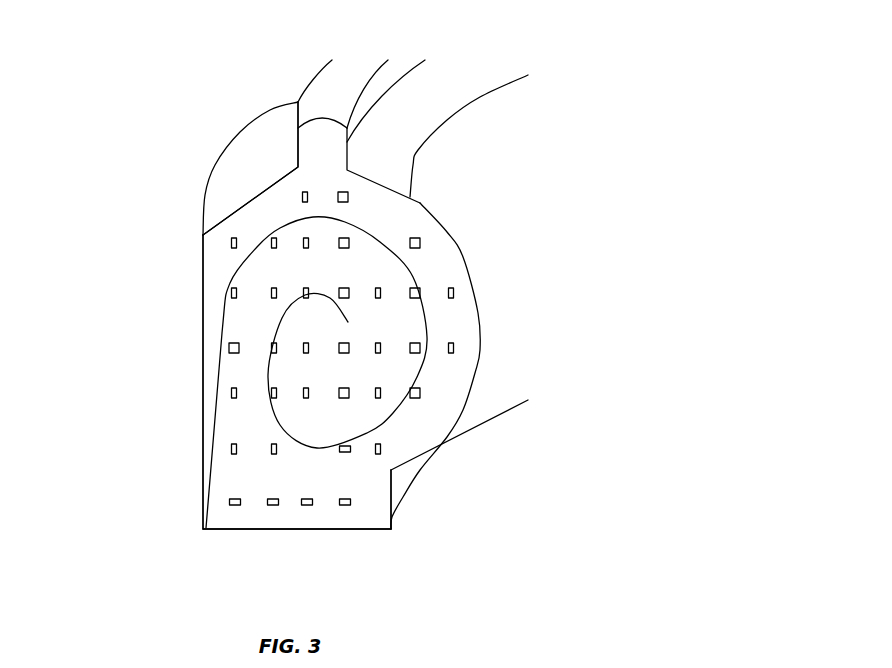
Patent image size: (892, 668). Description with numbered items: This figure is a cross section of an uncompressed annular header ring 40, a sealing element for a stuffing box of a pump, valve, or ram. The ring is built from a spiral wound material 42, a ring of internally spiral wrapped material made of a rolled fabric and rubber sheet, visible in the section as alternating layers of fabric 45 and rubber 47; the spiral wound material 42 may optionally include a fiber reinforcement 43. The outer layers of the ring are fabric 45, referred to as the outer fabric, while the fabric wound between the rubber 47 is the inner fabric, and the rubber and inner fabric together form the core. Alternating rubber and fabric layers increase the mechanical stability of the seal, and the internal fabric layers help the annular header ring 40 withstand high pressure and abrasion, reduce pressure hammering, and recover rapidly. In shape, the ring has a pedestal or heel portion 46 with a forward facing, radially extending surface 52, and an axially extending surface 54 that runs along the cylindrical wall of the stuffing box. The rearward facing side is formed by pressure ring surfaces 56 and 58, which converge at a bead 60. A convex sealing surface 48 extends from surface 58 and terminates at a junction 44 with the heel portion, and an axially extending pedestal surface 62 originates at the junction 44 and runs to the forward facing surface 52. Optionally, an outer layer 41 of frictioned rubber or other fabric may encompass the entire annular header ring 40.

The annular header ring 40 is at (150, 214).
The outer layer 41 is at (475, 287).
The spiral wound material 42 is at (477, 368).
The fiber reinforcement 43 is at (420, 242).
The junction 44 is at (397, 473).
The fabric 45 is at (267, 373).
The pedestal or heel portion 46 is at (347, 515).
The rubber 47 is at (308, 428).
The convex sealing surface 48 is at (460, 410).
The forward facing annular radially extending surface 52 is at (372, 532).
The annular axially extending surface 54 is at (203, 288).
The pressure ring surface 56 is at (253, 197).
The pressure ring surface 58 is at (433, 120).
The bead 60 is at (338, 90).
The pedestal surface 62 is at (393, 517).